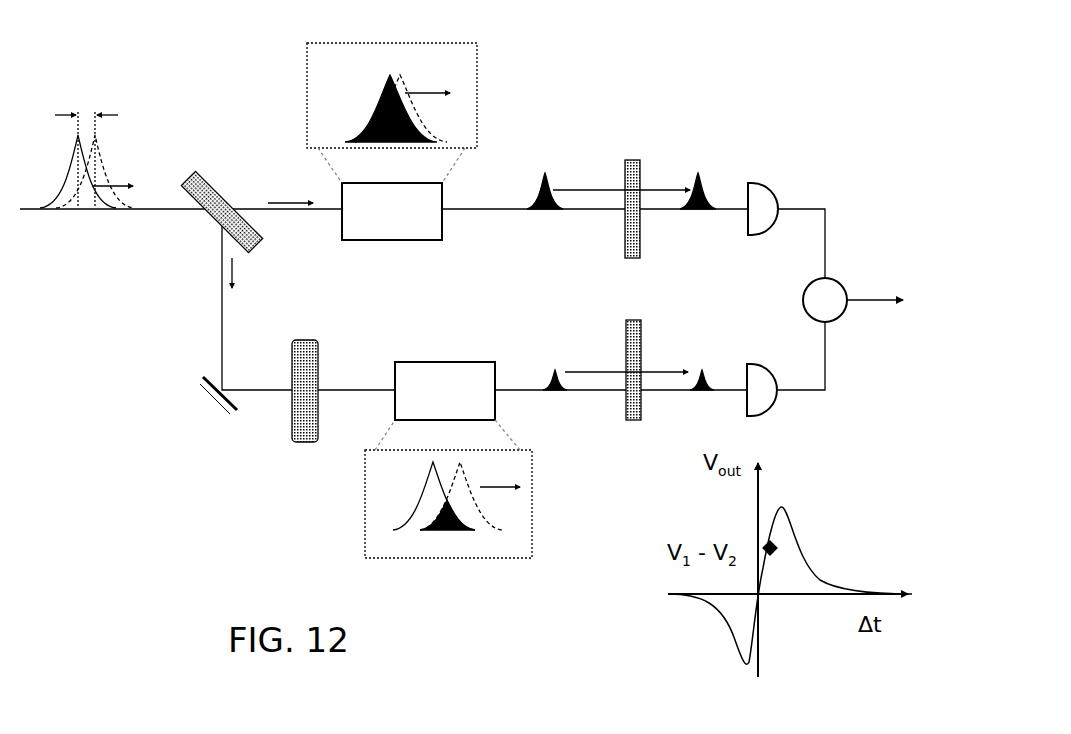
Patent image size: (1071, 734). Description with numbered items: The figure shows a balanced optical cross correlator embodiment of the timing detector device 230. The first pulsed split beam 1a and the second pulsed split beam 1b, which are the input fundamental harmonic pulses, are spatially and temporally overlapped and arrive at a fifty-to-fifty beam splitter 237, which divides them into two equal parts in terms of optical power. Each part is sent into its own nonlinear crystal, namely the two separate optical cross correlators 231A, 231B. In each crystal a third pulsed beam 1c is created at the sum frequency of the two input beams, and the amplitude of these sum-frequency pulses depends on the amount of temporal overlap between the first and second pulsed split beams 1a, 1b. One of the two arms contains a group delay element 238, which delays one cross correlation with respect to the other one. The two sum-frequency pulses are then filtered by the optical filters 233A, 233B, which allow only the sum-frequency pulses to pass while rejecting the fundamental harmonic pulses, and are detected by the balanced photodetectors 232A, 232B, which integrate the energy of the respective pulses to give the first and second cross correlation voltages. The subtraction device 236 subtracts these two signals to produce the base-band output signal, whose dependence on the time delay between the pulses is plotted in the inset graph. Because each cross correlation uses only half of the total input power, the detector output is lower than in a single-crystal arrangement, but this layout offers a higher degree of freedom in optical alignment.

The first pulsed split beam 1a is at (101, 168).
The second pulsed split beam 1b is at (74, 160).
The third pulsed beam 1c is at (698, 199).
The timing detector device 230 is at (645, 92).
The optical cross correlator 231A is at (392, 141).
The optical cross correlator 231B is at (448, 460).
The first electro-optical converter 232A is at (775, 193).
The second electro-optical converter 232B is at (766, 373).
The optical filter 233A is at (608, 222).
The optical filter 233B is at (628, 387).
The subtraction device 236 is at (852, 294).
The 50:50 beam splitter 237 is at (246, 222).
The group delay element 238 is at (297, 410).